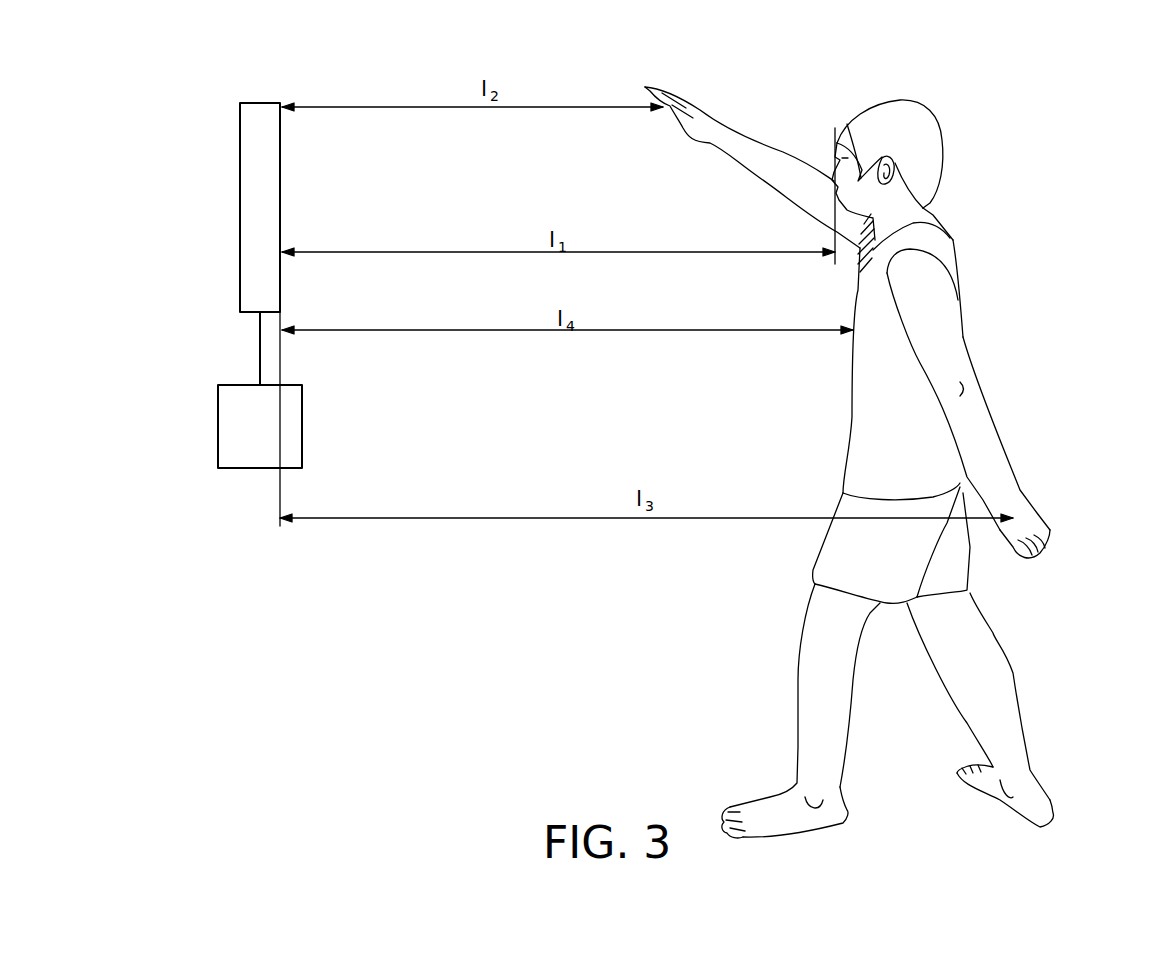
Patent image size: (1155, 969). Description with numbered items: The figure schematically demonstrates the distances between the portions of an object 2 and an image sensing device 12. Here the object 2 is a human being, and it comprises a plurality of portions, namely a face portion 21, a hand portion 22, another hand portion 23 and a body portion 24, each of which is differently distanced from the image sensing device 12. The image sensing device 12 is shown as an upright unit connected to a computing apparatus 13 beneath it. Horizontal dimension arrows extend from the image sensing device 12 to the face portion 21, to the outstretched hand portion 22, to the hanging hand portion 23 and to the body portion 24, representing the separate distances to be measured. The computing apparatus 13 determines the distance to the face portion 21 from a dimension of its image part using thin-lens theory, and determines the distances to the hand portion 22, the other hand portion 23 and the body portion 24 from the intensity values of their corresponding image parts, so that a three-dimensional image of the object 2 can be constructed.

The object 2 is at (891, 450).
The image sensing device 12 is at (240, 207).
The computing apparatus 13 is at (218, 427).
The face portion 21 is at (862, 165).
The hand portion 22 is at (684, 92).
The another hand portion 23 is at (1069, 525).
The body portion 24 is at (867, 387).